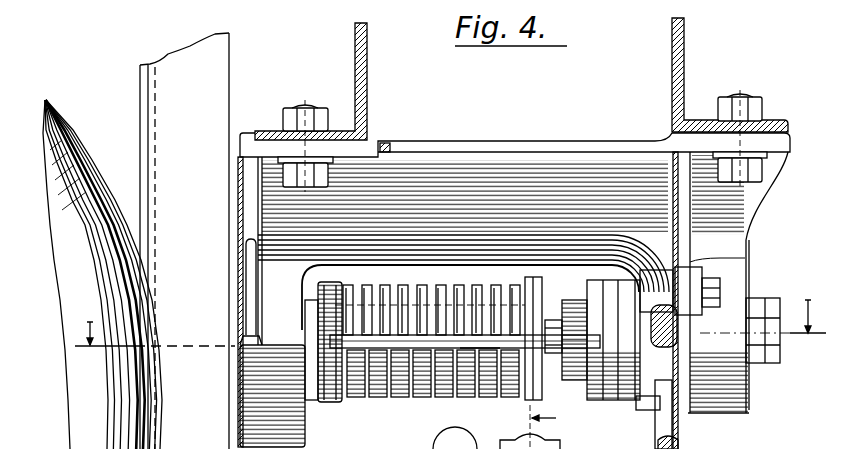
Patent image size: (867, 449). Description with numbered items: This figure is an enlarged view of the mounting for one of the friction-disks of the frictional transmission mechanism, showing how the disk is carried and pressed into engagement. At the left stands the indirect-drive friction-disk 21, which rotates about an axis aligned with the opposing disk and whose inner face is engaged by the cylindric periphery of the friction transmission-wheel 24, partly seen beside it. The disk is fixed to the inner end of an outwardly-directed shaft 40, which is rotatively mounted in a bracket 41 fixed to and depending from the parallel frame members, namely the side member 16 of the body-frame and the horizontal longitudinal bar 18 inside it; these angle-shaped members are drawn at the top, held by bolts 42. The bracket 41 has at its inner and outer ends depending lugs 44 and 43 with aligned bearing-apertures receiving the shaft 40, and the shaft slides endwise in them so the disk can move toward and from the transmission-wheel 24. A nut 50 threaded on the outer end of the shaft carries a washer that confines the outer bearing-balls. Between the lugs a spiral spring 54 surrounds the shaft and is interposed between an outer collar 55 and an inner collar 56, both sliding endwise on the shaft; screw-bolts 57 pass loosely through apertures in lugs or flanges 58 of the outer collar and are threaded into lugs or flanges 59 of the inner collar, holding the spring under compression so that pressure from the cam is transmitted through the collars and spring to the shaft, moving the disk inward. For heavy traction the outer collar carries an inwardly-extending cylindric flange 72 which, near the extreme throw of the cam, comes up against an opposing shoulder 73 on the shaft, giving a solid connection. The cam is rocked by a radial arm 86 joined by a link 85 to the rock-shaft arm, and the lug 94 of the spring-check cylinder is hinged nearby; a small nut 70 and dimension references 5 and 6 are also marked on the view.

The dimension line 5 is at (450, 333).
The dimension line 6 is at (496, 426).
The side member of the body-frame 16 is at (685, 77).
The horizontal longitudinal bar 18 is at (367, 85).
The indirect-drive friction-disk 21 is at (184, 241).
The friction transmission-wheel 24 is at (92, 223).
The outwardly-directed shaft 40 is at (452, 290).
The bracket 41 is at (750, 263).
The bolt 42 is at (305, 107).
The outer depending lug 43 is at (700, 304).
The inner depending lug 44 is at (292, 338).
The nut 50 is at (760, 353).
The spiral spring 54 is at (411, 396).
The outer collar 55 is at (575, 386).
The inner collar 56 is at (312, 395).
The screw-bolt 57 is at (484, 337).
The lug or flange of the outer collar 58 is at (536, 395).
The lug or flange of the inner collar 59 is at (314, 385).
The nut 70 is at (557, 320).
The cylindric flange 72 is at (509, 305).
The shoulder 73 is at (490, 318).
The link 85 is at (672, 439).
The radial arm 86 is at (650, 409).
The lug 94 is at (647, 308).